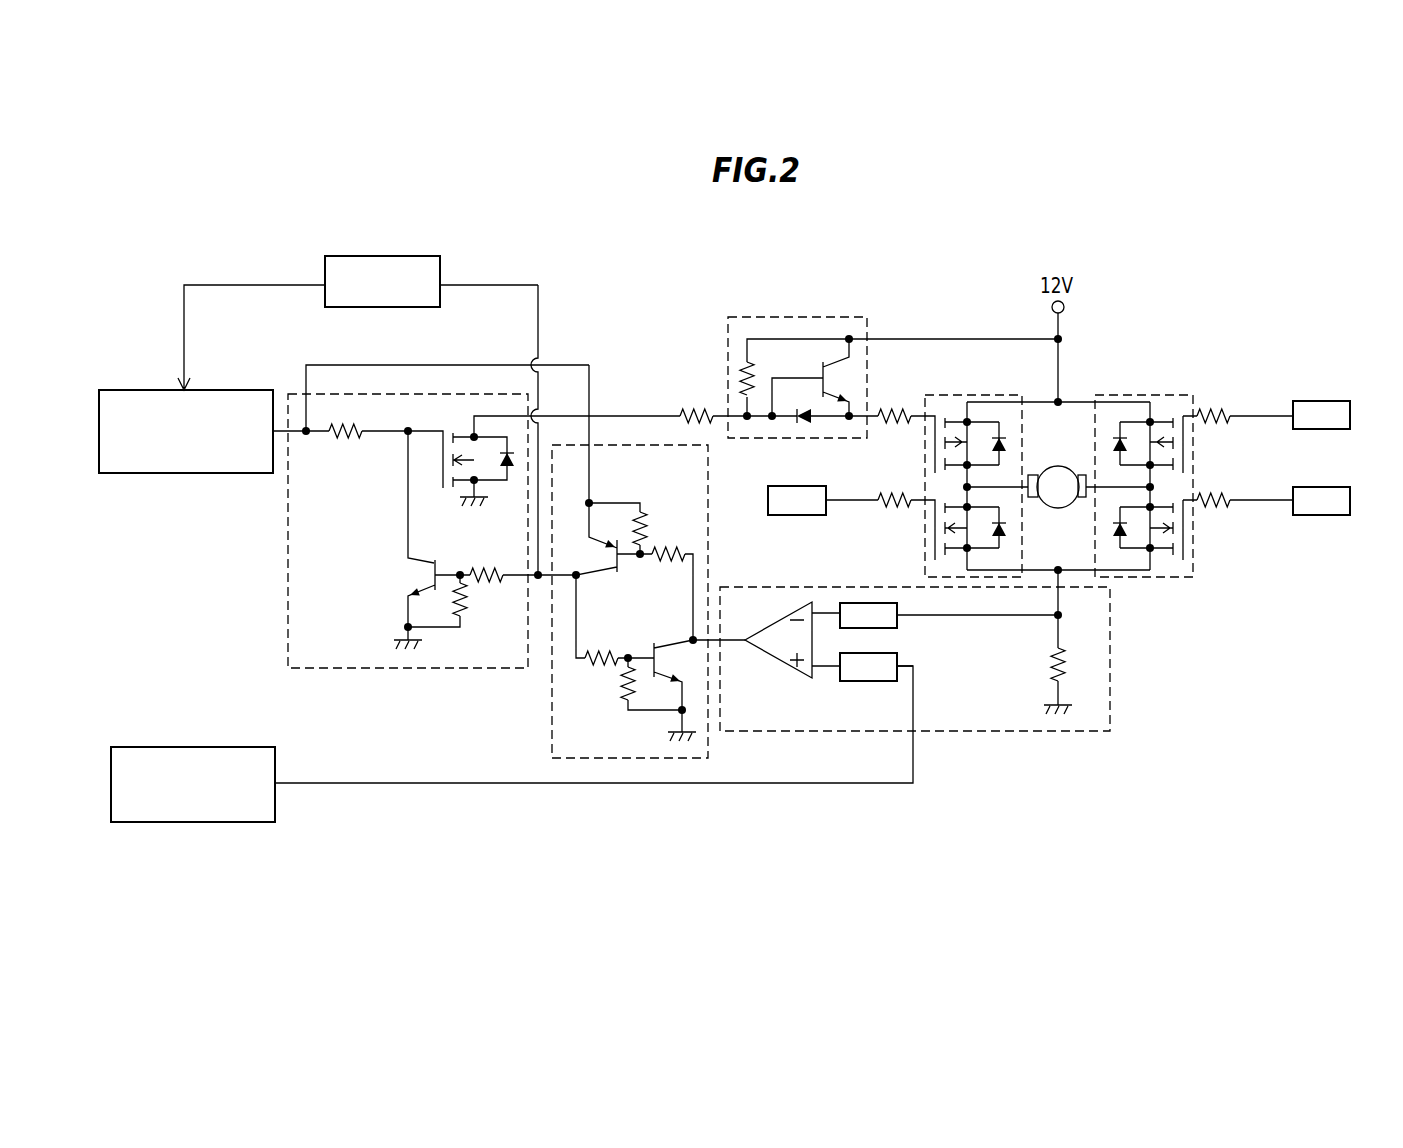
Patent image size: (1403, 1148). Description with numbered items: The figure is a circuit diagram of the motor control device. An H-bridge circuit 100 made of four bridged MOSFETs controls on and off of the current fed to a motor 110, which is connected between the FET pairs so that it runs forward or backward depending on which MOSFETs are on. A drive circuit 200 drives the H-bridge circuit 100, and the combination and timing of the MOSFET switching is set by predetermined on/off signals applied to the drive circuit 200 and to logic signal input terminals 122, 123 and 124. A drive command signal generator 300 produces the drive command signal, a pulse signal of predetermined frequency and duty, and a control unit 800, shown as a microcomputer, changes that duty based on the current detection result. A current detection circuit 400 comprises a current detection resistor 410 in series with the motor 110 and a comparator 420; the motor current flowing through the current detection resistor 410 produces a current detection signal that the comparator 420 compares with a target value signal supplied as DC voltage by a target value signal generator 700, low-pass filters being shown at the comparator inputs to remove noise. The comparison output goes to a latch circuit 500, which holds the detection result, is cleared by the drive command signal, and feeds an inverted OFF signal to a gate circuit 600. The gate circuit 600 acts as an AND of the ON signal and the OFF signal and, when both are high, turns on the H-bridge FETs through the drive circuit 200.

The control unit 800 is at (383, 256).
The gate circuit 600 is at (347, 393).
The drive command signal generator 300 is at (127, 388).
The target value signal generator 700 is at (193, 745).
The latch circuit 500 is at (640, 774).
The drive circuit 200 is at (780, 317).
The H-bridge circuit 100 is at (1131, 433).
The motor 110 is at (1058, 458).
The logic signal input terminal 122 is at (1342, 402).
The logic signal input terminal 124 is at (1342, 487).
The logic signal input terminal 123 is at (799, 515).
The current detection circuit 400 is at (1061, 659).
The comparator 420 is at (778, 660).
The current detection resistor 410 is at (1047, 675).